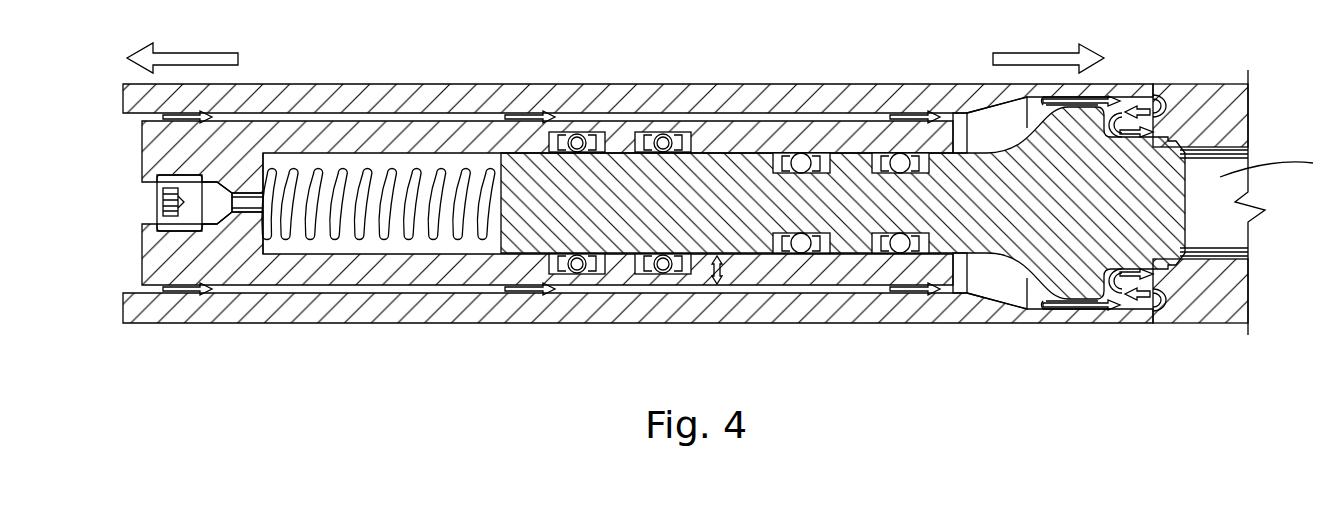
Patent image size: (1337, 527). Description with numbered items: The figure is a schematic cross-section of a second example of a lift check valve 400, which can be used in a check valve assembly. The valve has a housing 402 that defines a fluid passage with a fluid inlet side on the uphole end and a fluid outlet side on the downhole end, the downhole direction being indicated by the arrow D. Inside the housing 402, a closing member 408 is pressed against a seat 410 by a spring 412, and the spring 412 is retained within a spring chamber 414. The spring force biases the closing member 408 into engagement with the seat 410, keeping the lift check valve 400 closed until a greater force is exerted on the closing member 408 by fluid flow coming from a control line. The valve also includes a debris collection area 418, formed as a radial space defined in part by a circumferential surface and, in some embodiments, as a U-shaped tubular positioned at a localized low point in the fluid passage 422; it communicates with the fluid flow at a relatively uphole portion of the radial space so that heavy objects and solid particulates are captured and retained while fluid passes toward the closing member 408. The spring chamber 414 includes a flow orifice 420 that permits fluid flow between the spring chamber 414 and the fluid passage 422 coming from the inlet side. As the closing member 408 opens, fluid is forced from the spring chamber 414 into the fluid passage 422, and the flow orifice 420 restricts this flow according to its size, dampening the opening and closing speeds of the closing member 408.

The lift check valve 400 is at (827, 54).
The housing 402 is at (568, 84).
The closing member 408 is at (1063, 263).
The seat 410 is at (1187, 135).
The spring 412 is at (453, 240).
The spring chamber 414 is at (360, 248).
The debris collection area 418 is at (1178, 310).
The flow orifice 420 is at (717, 286).
The fluid passage 422 is at (577, 292).